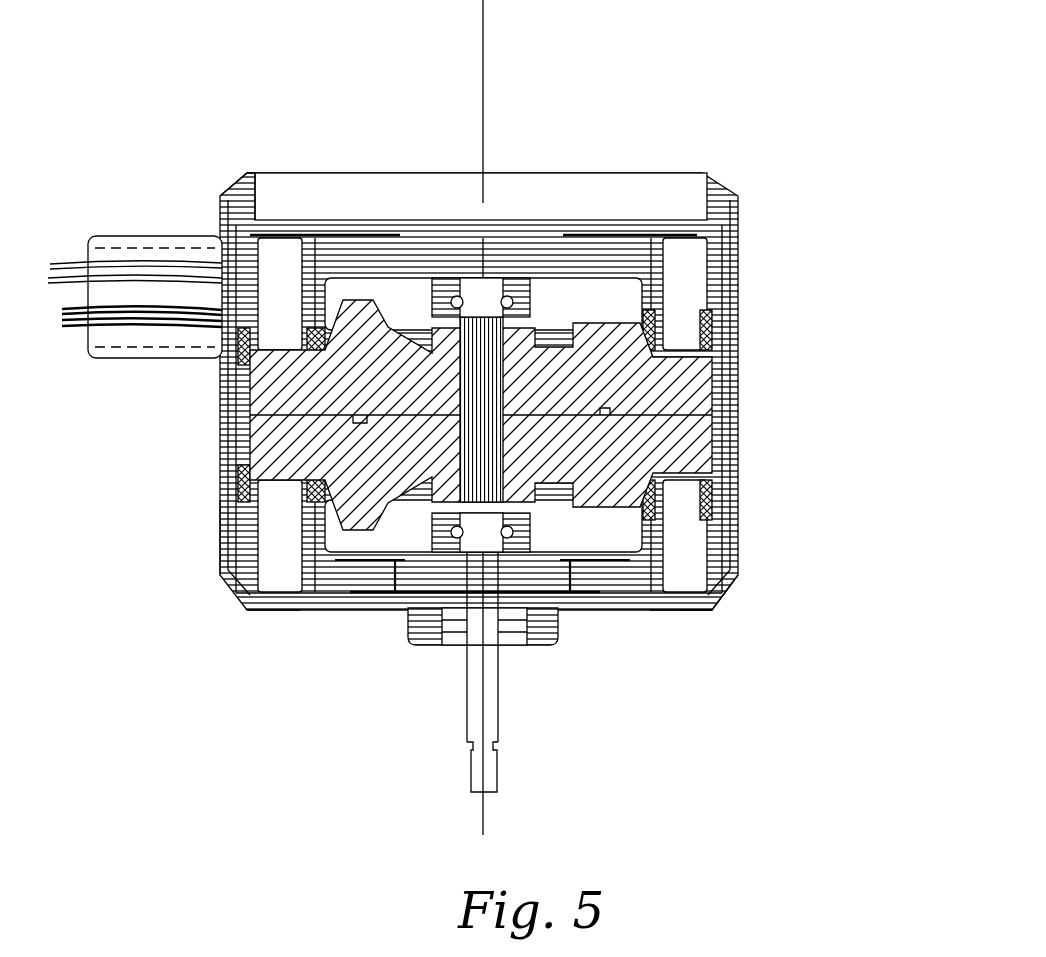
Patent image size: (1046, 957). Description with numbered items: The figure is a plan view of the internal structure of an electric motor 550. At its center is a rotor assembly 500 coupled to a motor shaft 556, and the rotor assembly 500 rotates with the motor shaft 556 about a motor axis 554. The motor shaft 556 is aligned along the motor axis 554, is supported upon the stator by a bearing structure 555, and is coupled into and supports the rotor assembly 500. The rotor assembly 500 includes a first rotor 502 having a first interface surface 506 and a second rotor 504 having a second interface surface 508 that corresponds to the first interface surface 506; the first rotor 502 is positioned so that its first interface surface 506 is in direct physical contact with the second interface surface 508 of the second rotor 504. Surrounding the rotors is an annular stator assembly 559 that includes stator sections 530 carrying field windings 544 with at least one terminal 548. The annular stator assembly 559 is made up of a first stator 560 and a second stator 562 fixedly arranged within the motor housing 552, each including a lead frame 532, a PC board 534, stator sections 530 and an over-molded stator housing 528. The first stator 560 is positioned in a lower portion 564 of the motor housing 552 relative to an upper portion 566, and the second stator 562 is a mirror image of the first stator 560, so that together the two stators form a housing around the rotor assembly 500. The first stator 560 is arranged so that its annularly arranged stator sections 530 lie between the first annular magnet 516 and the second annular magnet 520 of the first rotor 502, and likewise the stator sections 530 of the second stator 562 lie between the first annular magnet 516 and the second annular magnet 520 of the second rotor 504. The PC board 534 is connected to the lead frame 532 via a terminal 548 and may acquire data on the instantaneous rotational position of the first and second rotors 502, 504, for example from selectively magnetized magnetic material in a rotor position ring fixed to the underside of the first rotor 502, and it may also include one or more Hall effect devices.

The rotor assembly 500 is at (735, 413).
The first rotor 502 is at (710, 437).
The second rotor 504 is at (272, 397).
The first interface surface 506 is at (272, 458).
The second interface surface 508 is at (735, 388).
The first annular magnet 516 is at (238, 258).
The second annular magnet 520 is at (652, 330).
The over-molded stator housing 528 is at (433, 637).
The stator sections 530 is at (688, 367).
The lead frame 532 is at (272, 610).
The PC board 534 is at (373, 562).
The field windings 544 is at (245, 535).
The terminal 548 is at (632, 562).
The electric motor 550 is at (252, 48).
The motor housing 552 is at (232, 192).
The motor axis 554 is at (484, 152).
The bearing structure 555 is at (462, 282).
The motor shaft 556 is at (500, 706).
The annular stator assembly 559 is at (766, 228).
The first stator 560 is at (728, 597).
The second stator 562 is at (672, 220).
The lower portion 564 is at (212, 568).
The upper portion 566 is at (812, 170).